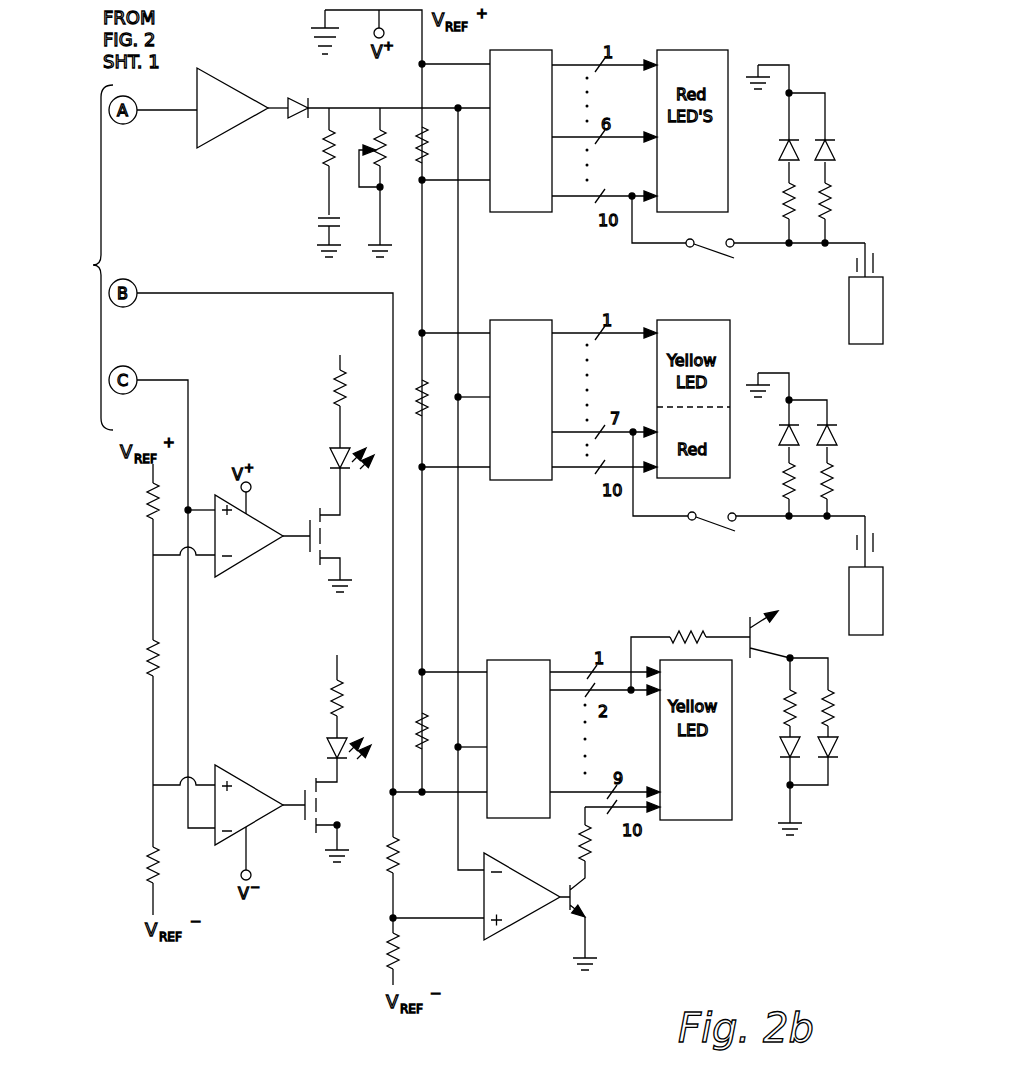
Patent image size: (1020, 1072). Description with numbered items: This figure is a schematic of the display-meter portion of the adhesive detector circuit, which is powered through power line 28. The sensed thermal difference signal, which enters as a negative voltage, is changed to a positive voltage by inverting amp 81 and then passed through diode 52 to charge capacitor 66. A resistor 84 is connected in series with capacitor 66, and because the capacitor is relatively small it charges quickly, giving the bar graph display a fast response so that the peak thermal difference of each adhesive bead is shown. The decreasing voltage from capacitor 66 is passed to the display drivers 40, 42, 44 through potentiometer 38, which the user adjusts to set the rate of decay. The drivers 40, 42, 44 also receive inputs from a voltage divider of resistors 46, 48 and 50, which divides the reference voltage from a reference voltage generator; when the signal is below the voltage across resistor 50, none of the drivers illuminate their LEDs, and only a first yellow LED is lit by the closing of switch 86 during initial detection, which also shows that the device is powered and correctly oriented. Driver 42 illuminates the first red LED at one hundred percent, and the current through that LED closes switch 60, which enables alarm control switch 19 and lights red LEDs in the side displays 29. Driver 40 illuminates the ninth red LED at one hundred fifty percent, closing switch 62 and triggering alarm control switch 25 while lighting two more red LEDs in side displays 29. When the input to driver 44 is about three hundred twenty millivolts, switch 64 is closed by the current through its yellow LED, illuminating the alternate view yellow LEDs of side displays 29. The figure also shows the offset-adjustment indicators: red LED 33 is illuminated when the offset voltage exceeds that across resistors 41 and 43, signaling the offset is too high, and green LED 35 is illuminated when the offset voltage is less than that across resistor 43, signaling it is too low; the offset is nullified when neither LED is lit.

The alarm control switch 19 is at (849, 575).
The alarm control switch 25 is at (849, 306).
The power line 28 is at (310, 36).
The side displays 29 is at (771, 458).
The red LED 33 is at (330, 412).
The green LED 35 is at (310, 707).
The potentiometer 38 is at (363, 150).
The display driver 40 is at (533, 140).
The resistor 41 is at (165, 646).
The display driver 42 is at (533, 401).
The resistor 43 is at (166, 865).
The display driver 44 is at (530, 741).
The resistor 46 is at (428, 150).
The resistor 48 is at (428, 387).
The resistor 50 is at (434, 716).
The diode 52 is at (292, 101).
The switch 60 is at (747, 480).
The switch 62 is at (747, 225).
The switch 64 is at (715, 641).
The capacitor 66 is at (316, 222).
The inverting amp 81 is at (227, 118).
The resistor 84 is at (322, 164).
The switch 86 is at (552, 888).